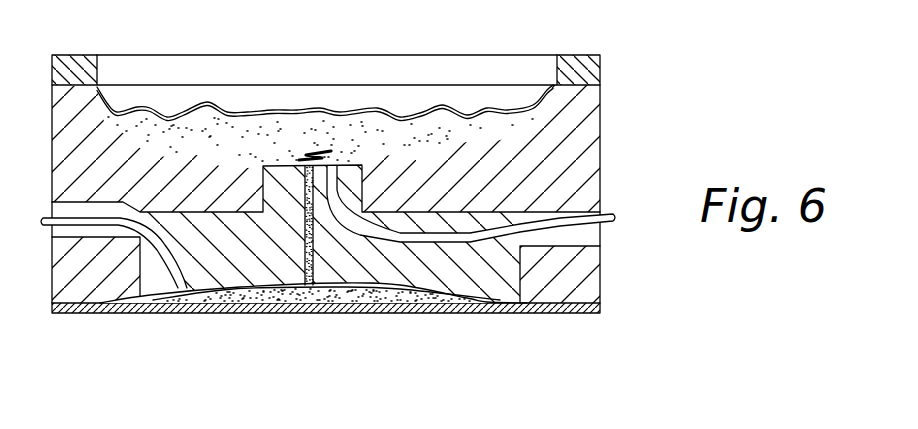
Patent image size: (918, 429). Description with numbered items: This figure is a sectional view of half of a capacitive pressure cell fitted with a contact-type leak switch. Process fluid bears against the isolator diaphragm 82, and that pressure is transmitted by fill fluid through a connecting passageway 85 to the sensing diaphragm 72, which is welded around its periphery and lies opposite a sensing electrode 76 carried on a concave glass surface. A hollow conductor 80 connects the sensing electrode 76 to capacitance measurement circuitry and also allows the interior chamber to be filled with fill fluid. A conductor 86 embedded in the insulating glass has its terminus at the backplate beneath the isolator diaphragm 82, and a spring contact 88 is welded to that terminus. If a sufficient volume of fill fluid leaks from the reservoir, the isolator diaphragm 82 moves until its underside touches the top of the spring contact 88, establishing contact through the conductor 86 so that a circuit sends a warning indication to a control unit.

The sensing diaphragm 72 is at (450, 310).
The sensing electrode 76 is at (233, 287).
The conductor 80 is at (150, 253).
The isolator diaphragm 82 is at (477, 108).
The connecting passageway 85 is at (314, 245).
The conductor 86 is at (565, 212).
The spring contact 88 is at (318, 152).